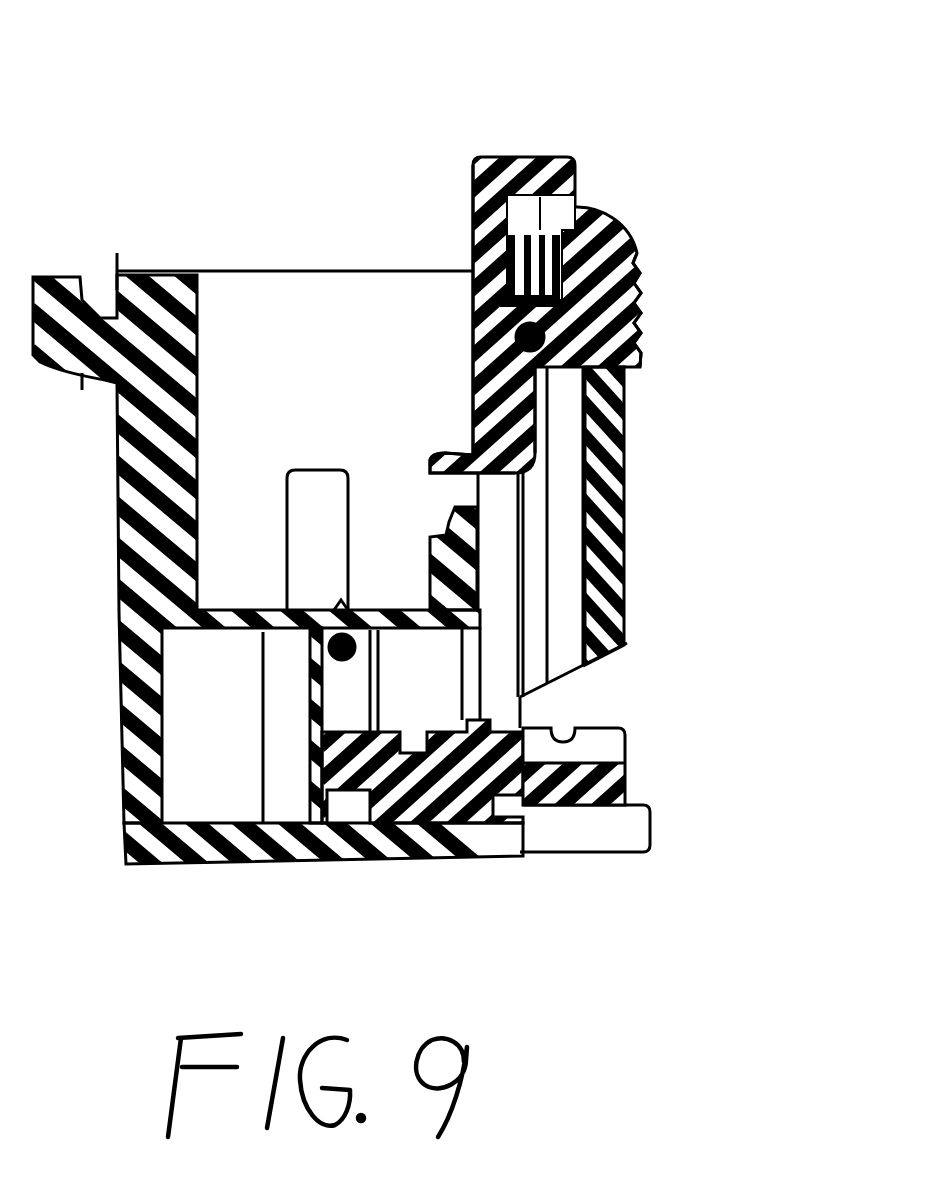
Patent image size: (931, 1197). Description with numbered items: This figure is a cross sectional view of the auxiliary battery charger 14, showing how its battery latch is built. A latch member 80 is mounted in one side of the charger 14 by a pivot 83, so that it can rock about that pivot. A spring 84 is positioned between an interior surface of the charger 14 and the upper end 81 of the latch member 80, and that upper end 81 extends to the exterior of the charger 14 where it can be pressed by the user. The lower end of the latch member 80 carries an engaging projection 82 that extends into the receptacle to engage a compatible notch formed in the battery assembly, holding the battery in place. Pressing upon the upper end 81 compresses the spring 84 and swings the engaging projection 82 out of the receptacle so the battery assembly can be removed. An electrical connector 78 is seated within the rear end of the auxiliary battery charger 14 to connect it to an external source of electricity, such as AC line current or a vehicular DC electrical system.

The auxiliary battery charger 14 is at (310, 893).
The electrical connector 78 is at (627, 790).
The latch member 80 is at (632, 193).
The upper end of the latch member 81 is at (644, 292).
The engaging projection 82 is at (435, 455).
The pivot 83 is at (473, 310).
The spring 84 is at (553, 162).